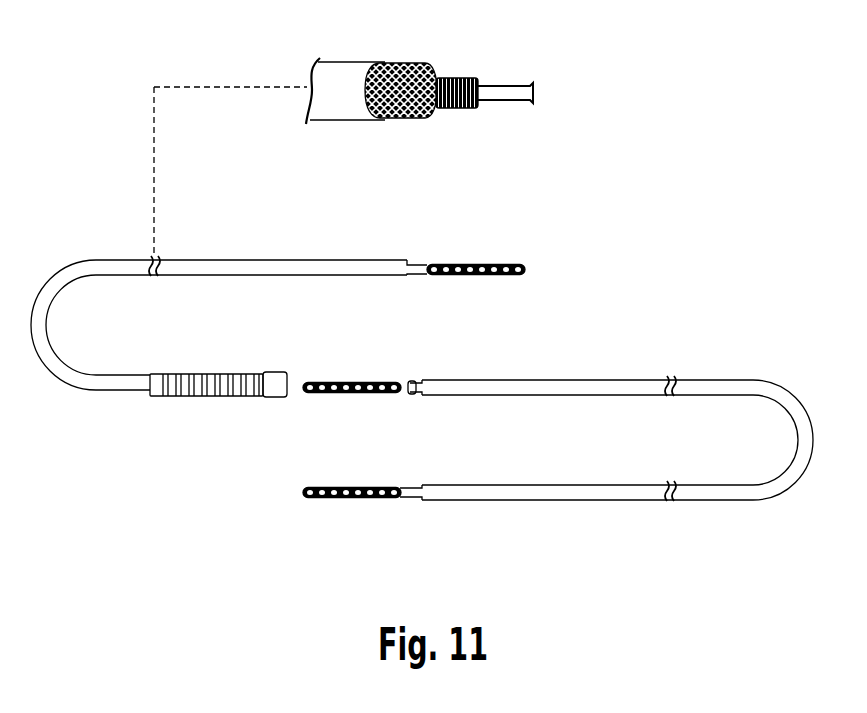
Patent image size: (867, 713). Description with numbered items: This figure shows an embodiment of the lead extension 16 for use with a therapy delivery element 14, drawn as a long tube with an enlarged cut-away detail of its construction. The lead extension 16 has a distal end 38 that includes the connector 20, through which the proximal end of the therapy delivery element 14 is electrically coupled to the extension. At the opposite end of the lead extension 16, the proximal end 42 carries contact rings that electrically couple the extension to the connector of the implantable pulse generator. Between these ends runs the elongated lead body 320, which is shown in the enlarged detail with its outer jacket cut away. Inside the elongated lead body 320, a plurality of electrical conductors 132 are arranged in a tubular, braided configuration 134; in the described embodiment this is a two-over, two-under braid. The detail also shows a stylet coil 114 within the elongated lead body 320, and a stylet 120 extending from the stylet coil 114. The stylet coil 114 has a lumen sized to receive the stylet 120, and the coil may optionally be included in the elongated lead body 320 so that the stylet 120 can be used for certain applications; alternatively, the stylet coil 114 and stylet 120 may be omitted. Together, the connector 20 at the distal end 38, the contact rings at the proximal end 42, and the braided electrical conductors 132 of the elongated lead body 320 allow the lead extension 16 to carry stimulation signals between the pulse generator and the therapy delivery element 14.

The therapy delivery element 14 is at (612, 380).
The extension lead 16 is at (117, 259).
The connector 20 is at (190, 372).
The distal end 38 is at (115, 391).
The proximal end 42 is at (484, 264).
The stylet coil 114 is at (455, 108).
The stylet 120 is at (507, 88).
The electrical conductors 132 is at (397, 118).
The braided configuration 134 is at (415, 62).
The elongated lead body 320 is at (352, 76).